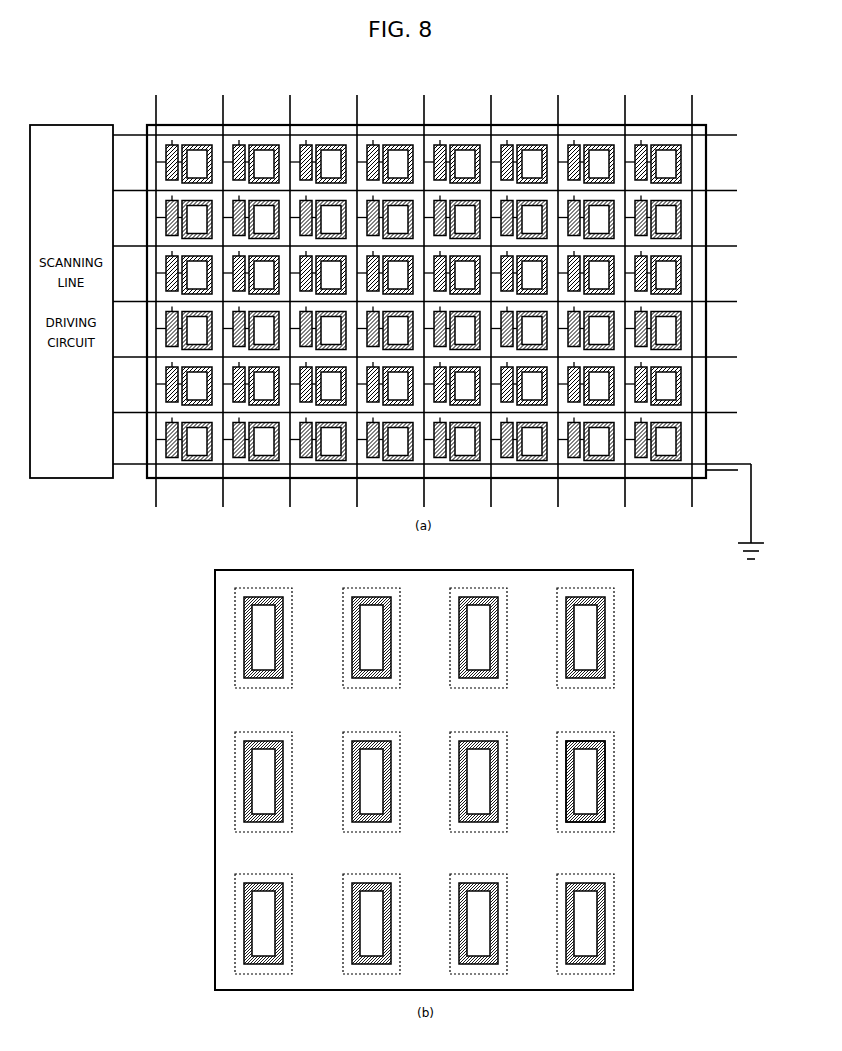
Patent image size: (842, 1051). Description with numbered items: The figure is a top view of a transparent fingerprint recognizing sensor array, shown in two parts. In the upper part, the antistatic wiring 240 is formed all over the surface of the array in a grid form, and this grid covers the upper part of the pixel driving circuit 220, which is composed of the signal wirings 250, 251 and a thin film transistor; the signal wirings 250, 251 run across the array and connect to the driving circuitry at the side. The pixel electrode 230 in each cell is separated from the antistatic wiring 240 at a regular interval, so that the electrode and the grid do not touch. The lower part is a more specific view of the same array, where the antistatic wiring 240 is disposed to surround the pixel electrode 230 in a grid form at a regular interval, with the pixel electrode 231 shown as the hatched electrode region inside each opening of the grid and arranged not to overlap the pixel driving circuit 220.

The pixel driving circuit 220 is at (715, 278).
The pixel electrode 230 is at (706, 216).
The pixel electrode 231 is at (612, 778).
The antistatic wiring 240 is at (706, 160).
The signal wiring 250 is at (707, 436).
The signal wiring 251 is at (152, 486).